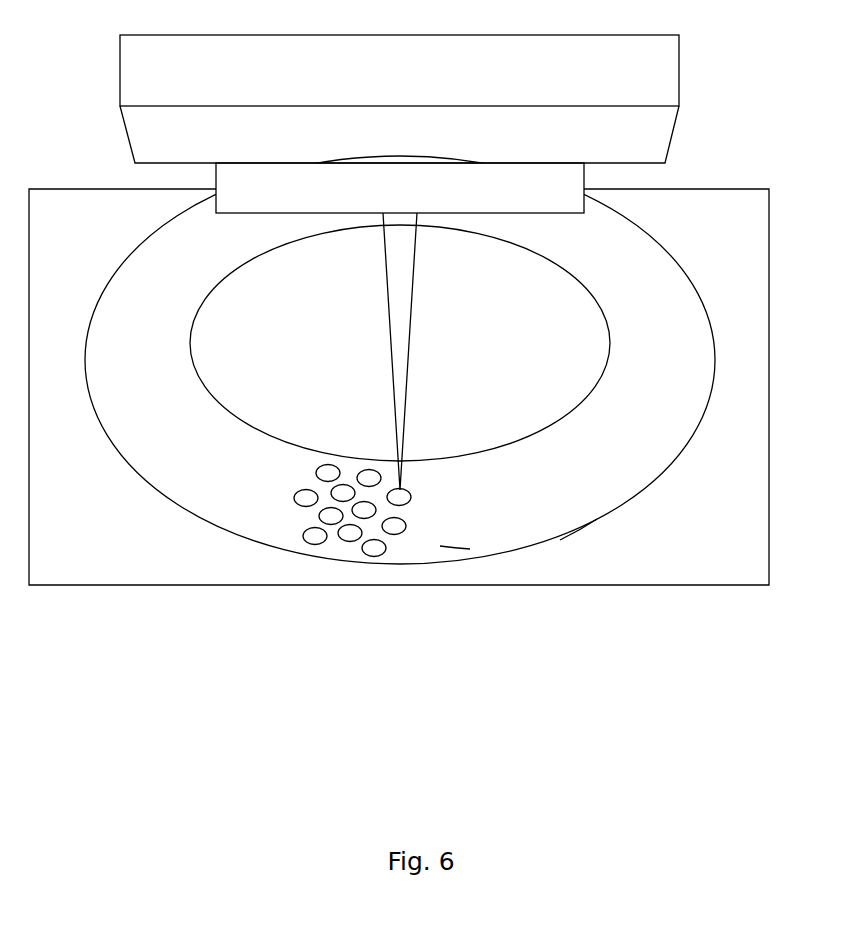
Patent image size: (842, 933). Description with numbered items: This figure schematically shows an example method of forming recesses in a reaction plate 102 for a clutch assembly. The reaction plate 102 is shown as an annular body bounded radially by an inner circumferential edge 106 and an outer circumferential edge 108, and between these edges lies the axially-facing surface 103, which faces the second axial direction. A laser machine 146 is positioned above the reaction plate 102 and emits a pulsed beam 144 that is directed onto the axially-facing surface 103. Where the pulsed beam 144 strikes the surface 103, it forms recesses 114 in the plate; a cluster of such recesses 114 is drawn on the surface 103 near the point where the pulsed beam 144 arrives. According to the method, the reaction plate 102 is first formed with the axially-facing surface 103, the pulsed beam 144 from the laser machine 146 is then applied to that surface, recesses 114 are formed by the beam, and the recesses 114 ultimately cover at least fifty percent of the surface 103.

The laser machine 146 is at (682, 72).
The pulsed beam 144 is at (414, 318).
The reaction plate 102 is at (668, 473).
The inner circumferential edge 106 is at (563, 416).
The outer circumferential edge 108 is at (597, 520).
The surface 103 is at (450, 543).
The recesses 114 is at (343, 546).